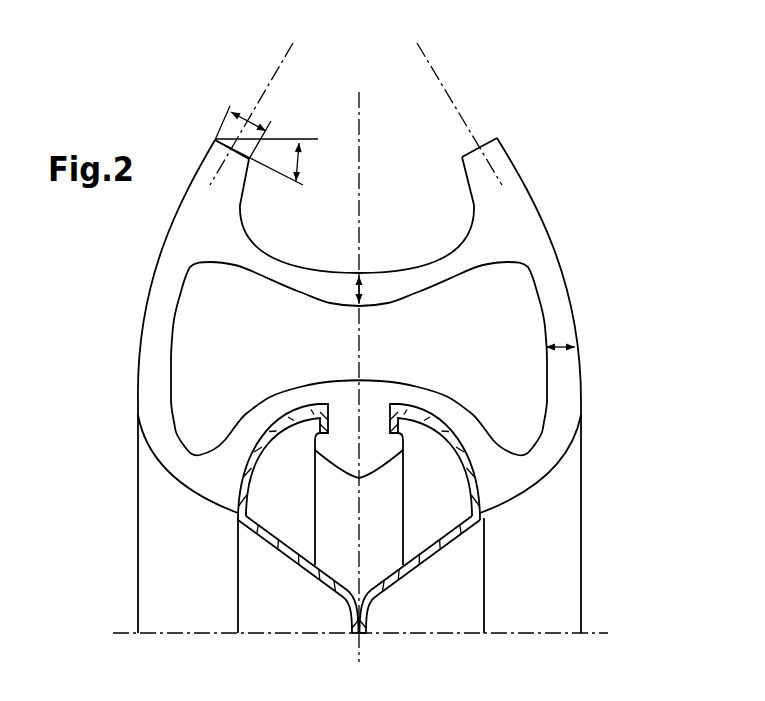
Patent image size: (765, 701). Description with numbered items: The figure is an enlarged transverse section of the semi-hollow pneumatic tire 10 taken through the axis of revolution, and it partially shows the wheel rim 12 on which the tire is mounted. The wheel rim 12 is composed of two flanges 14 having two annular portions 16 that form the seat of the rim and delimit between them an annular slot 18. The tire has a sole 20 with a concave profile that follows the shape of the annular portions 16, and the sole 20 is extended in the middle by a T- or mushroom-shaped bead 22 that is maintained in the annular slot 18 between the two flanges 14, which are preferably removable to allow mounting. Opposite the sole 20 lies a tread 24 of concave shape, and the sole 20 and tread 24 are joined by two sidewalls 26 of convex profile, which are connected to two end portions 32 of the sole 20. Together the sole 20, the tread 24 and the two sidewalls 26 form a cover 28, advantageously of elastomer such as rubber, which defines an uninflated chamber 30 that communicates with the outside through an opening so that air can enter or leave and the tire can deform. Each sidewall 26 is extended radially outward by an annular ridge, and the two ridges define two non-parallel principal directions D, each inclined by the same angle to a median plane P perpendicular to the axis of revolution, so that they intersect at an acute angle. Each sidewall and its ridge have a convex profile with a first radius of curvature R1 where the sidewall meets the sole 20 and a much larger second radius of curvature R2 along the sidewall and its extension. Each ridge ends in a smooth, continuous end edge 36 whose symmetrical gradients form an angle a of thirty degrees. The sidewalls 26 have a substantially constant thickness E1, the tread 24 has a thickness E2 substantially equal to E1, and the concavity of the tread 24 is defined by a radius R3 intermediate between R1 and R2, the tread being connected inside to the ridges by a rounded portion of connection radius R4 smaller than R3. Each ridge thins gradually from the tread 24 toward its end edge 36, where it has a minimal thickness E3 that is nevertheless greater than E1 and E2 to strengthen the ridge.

The semi-hollow pneumatic tire 10 is at (351, 378).
The wheel rim 12 is at (384, 618).
The flanges 14 is at (300, 572).
The annular portions 16 is at (268, 394).
The annular slot 18 is at (391, 420).
The sole 20 is at (347, 403).
The bead 22 is at (378, 455).
The tread 24 is at (332, 284).
The sidewalls 26 is at (153, 343).
The cover 28 is at (147, 383).
The chamber 30 is at (278, 332).
The end portions 32 is at (200, 474).
The end edge 36 is at (480, 146).
The median plane P is at (360, 96).
The principal directions D is at (420, 58).
The angle a is at (270, 162).
The sidewall thickness E1 is at (541, 346).
The tread thickness E2 is at (364, 283).
The minimal ridge thickness E3 is at (234, 110).
The first radius of curvature R1 is at (565, 443).
The second radius of curvature R2 is at (557, 257).
The tread radius R3 is at (462, 233).
The connection radius R4 is at (252, 236).